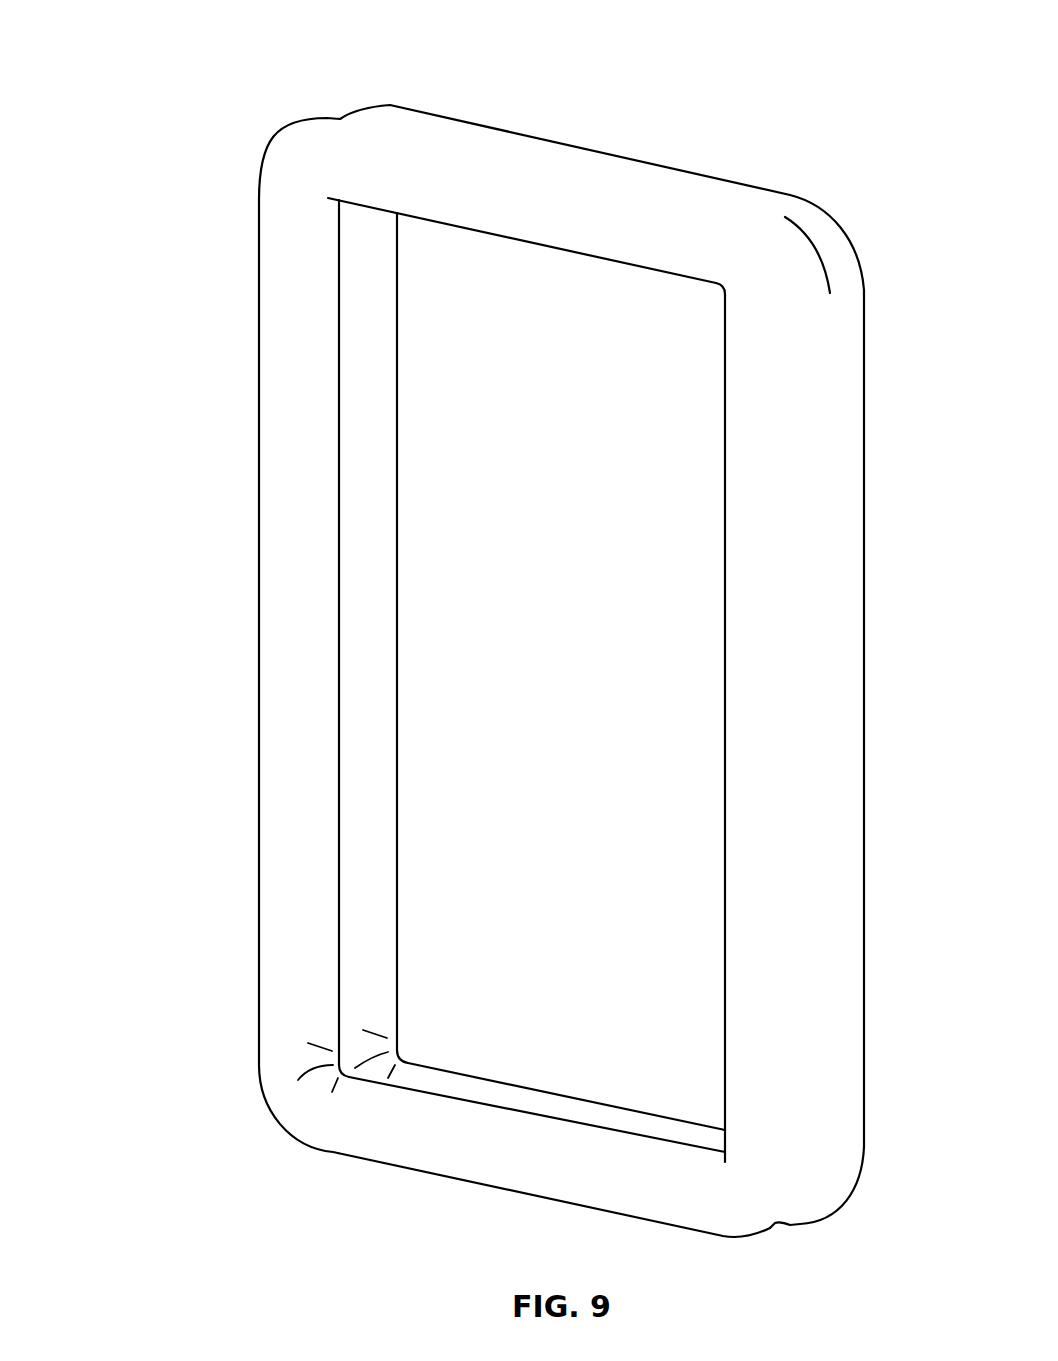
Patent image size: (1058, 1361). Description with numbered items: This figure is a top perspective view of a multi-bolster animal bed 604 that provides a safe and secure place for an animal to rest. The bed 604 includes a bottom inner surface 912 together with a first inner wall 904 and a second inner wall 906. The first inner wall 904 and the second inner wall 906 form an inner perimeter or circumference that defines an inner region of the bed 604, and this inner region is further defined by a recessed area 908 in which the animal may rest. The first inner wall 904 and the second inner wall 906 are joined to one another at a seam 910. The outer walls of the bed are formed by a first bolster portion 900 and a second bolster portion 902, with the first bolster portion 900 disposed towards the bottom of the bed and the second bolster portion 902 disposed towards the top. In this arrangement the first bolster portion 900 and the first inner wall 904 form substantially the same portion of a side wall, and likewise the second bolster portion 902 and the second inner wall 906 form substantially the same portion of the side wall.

The animal bed 604 is at (178, 170).
The first bolster portion 900 is at (832, 240).
The second bolster portion 902 is at (778, 312).
The first inner wall 904 is at (370, 350).
The second inner wall 906 is at (298, 510).
The recessed area 908 is at (445, 914).
The seam 910 is at (333, 652).
The bottom inner surface 912 is at (673, 738).